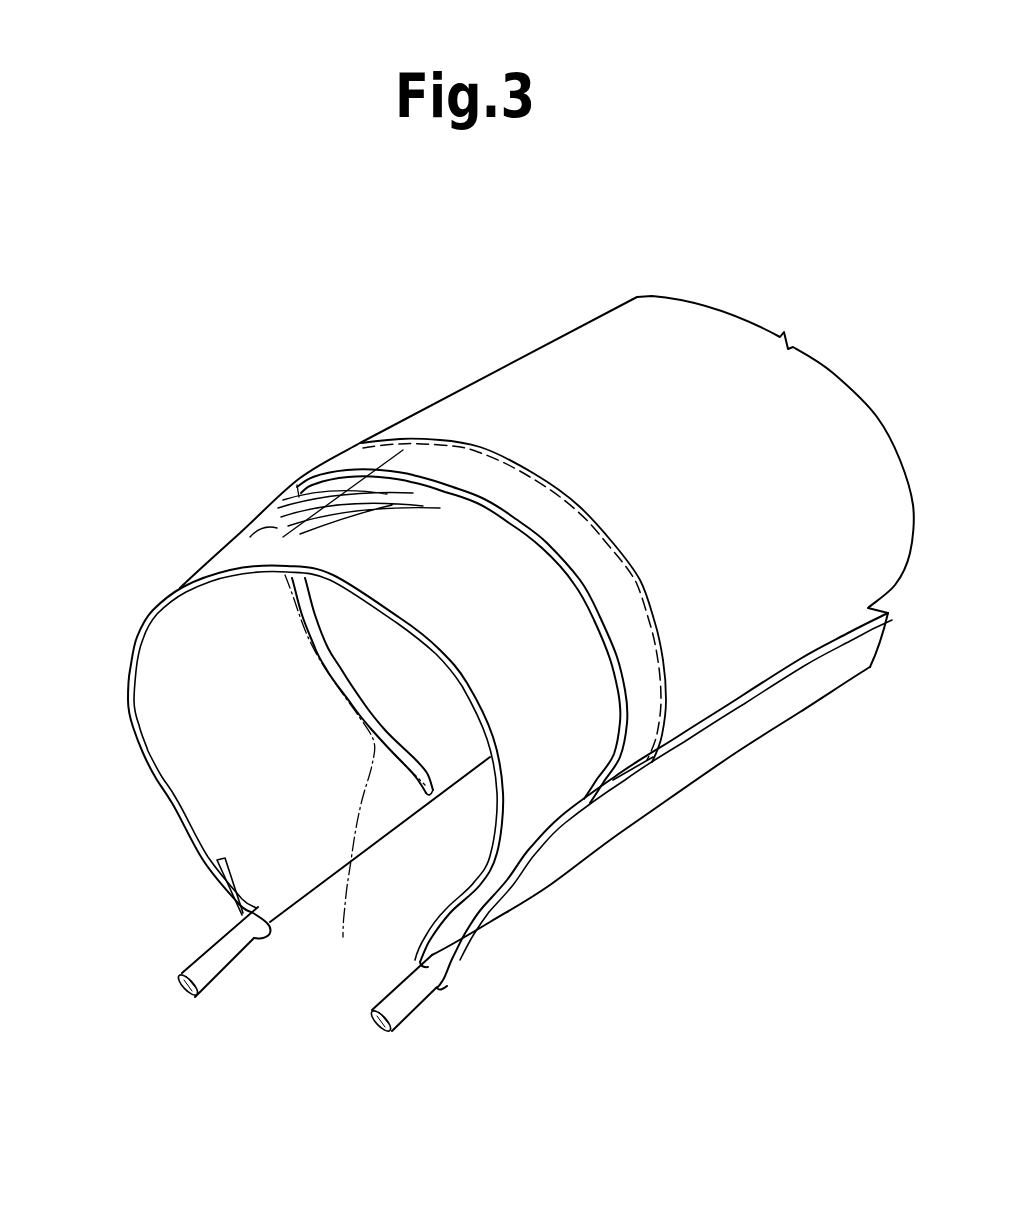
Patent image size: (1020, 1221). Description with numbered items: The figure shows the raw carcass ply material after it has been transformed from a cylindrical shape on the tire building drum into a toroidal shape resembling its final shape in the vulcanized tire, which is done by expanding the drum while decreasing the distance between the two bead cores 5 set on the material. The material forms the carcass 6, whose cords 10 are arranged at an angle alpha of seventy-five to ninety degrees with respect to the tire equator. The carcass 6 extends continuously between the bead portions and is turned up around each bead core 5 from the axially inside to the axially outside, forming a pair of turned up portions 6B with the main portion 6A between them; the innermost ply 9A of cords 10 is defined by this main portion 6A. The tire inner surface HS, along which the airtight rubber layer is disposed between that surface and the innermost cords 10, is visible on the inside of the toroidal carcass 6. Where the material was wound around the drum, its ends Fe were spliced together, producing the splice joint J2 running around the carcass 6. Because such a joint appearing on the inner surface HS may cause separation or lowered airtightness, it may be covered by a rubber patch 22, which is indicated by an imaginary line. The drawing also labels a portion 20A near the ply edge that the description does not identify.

The bead core 5 is at (200, 958).
The carcass 6 is at (439, 375).
The main portion 6A is at (187, 777).
The ply 9A is at (315, 766).
The turned up portion 6B is at (217, 880).
The cords 10 is at (250, 537).
The ply edge portion 20A is at (428, 775).
The rubber patch 22 is at (355, 777).
The splice joint J2 is at (527, 493).
The ends of the raw carcass ply material Fe is at (613, 650).
The tire inner surface HS is at (286, 868).